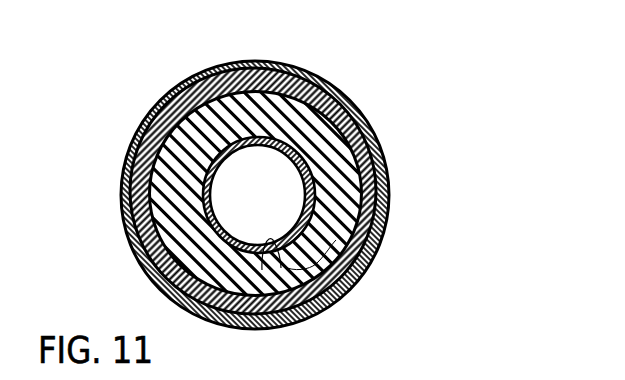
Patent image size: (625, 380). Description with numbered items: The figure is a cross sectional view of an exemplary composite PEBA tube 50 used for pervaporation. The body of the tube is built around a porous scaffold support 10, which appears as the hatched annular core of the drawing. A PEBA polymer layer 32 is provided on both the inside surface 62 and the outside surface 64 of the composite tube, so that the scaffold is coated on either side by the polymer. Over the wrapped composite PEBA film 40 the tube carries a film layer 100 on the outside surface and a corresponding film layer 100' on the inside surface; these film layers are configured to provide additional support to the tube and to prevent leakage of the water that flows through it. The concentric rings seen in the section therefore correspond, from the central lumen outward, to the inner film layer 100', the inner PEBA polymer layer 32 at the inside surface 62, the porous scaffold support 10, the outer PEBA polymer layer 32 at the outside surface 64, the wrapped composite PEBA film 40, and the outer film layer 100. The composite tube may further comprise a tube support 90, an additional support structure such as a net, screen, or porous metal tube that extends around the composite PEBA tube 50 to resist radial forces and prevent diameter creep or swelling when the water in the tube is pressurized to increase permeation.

The composite PEBA tube 50 is at (176, 62).
The porous scaffold support 10 is at (328, 310).
The film layer 100 is at (296, 195).
The outside surface 64 is at (392, 200).
The wrapped composite PEBA film 40 is at (392, 165).
The PEBA polymer layer 32 is at (382, 147).
The film layer 100' is at (259, 195).
The inside surface 62 is at (265, 328).
The tube support 90 is at (363, 277).